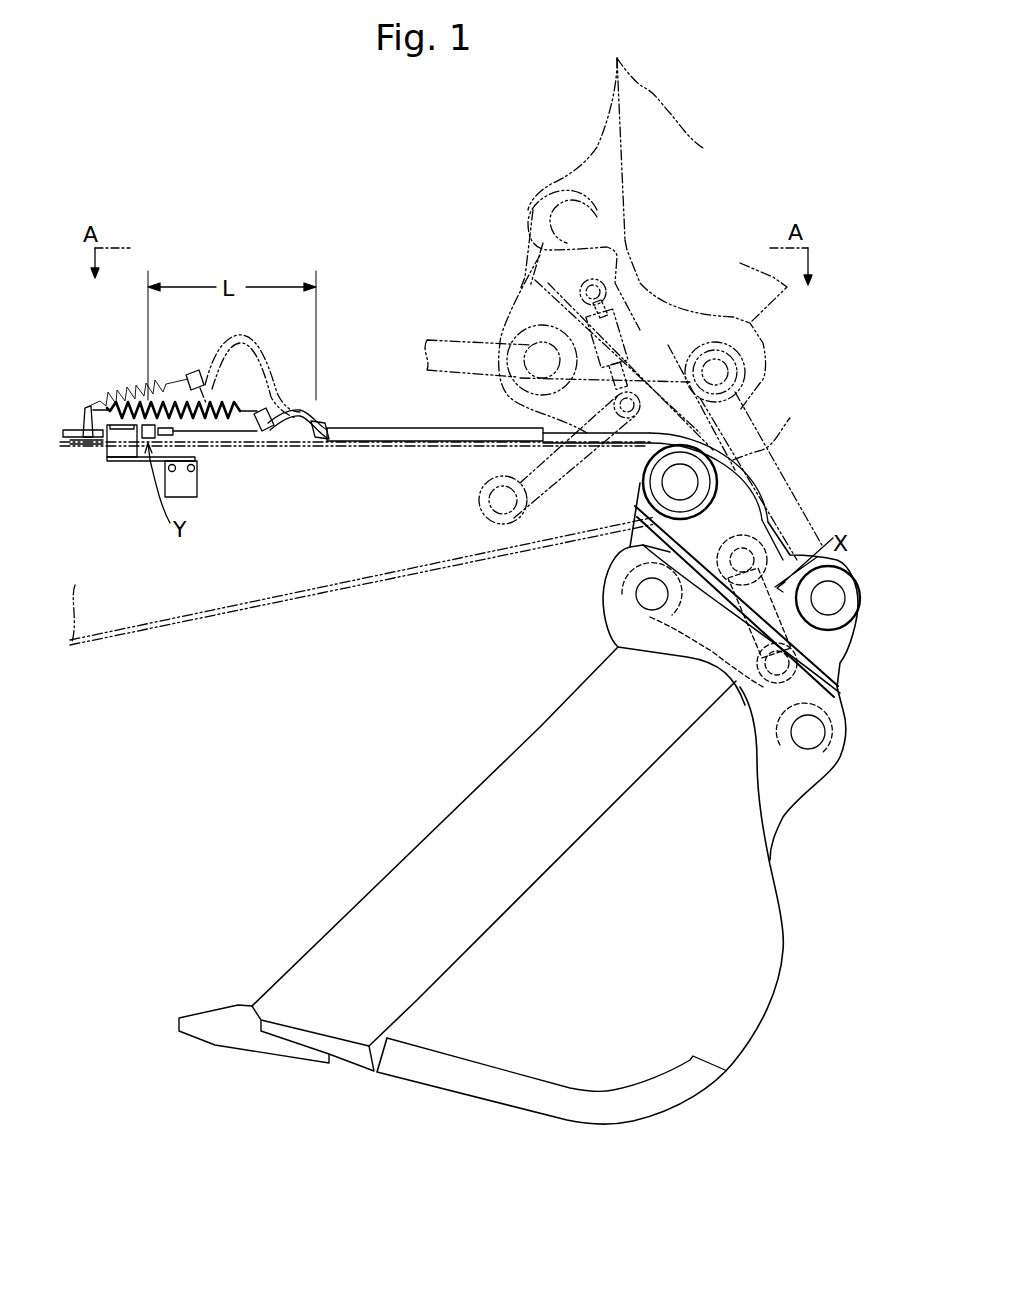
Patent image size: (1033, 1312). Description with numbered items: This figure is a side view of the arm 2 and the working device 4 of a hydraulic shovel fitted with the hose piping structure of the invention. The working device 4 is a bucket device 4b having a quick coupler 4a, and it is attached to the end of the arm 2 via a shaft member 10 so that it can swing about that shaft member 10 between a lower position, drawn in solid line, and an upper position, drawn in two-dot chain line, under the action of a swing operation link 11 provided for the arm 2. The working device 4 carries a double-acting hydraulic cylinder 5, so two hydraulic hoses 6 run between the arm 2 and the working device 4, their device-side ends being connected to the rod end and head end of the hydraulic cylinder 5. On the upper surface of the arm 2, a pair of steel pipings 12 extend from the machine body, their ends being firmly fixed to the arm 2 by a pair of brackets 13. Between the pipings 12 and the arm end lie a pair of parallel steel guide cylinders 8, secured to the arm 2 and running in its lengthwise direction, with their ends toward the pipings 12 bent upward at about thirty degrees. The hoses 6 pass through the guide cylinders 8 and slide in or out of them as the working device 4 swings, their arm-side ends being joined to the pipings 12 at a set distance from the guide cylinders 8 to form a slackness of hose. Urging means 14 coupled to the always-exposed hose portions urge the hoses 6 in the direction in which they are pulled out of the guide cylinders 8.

The arm 2 is at (333, 593).
The working device 4 is at (573, 168).
The quick coupler 4a is at (865, 630).
The bucket device 4b is at (783, 920).
The hydraulic cylinder 5 is at (733, 580).
The hydraulic hoses 6 is at (263, 360).
The guide cylinders 8 is at (373, 426).
The shaft member 10 is at (668, 484).
The swing operation link 11 is at (787, 483).
The pipings 12 is at (93, 443).
The brackets 13 is at (120, 460).
The urging means 14 is at (128, 386).